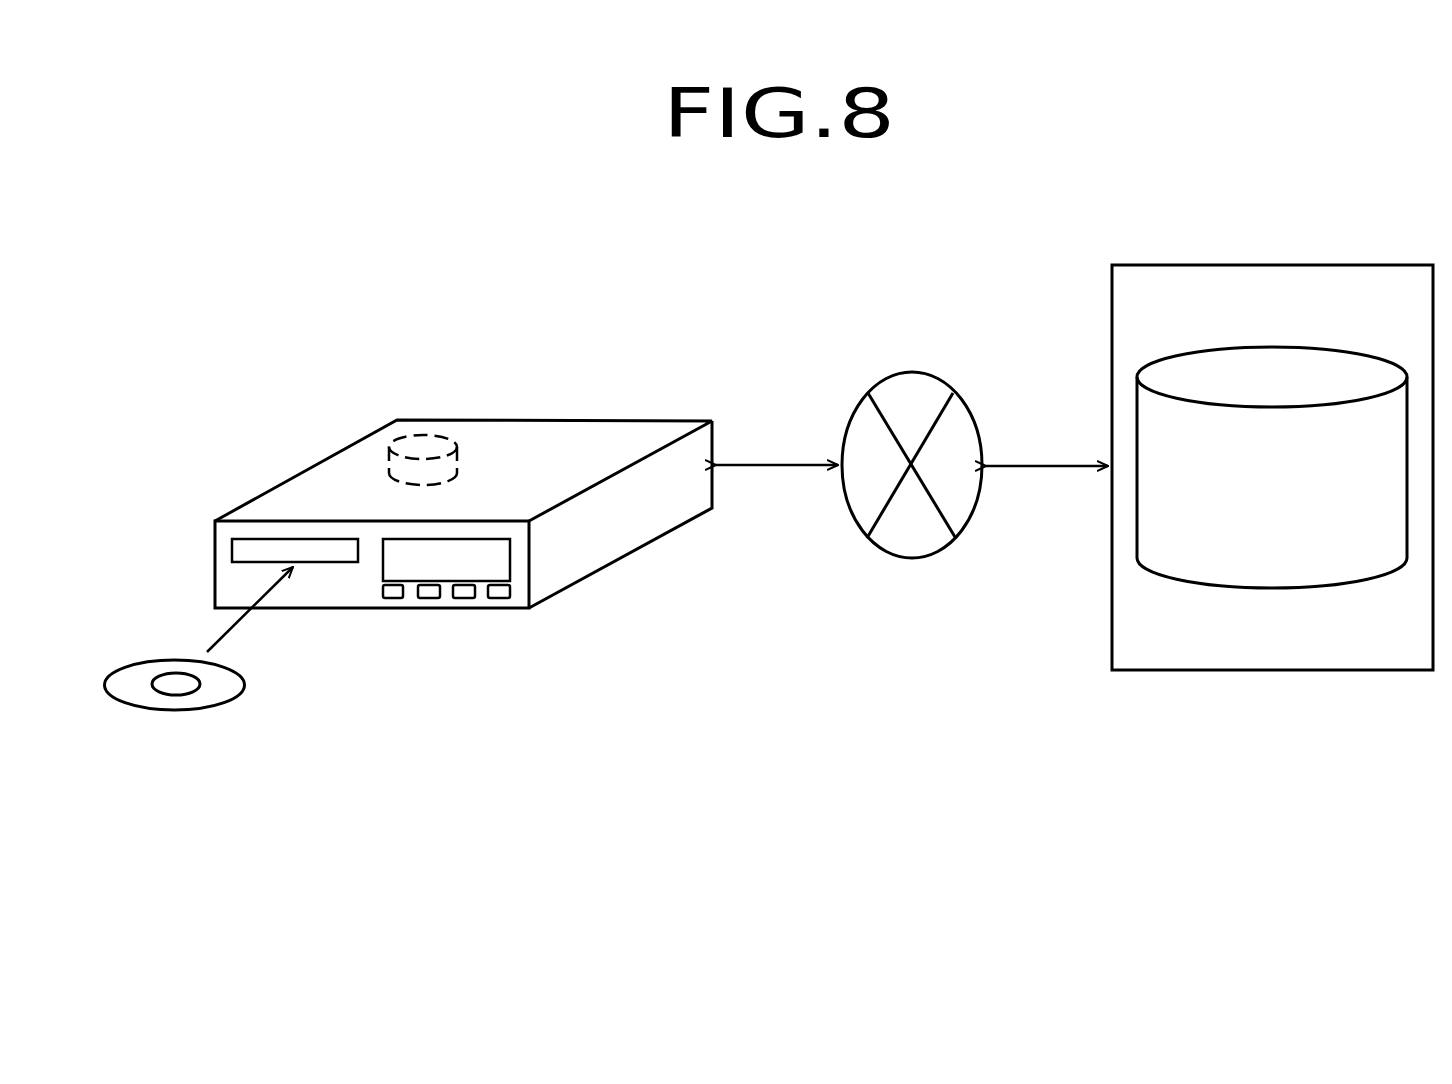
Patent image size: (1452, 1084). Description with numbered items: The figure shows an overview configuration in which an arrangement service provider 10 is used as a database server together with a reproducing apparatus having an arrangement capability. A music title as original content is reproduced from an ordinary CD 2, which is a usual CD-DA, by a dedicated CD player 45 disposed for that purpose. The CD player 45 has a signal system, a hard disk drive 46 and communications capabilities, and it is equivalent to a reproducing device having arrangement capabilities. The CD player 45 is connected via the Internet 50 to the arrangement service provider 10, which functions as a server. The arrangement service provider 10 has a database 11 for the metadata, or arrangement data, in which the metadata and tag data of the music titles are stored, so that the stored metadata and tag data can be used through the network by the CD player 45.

The CD 2 is at (170, 710).
The arrangement service provider 10 is at (1197, 670).
The database 11 is at (1330, 587).
The CD player 45 is at (433, 608).
The hard disk drive 46 is at (421, 435).
The Internet 50 is at (908, 558).